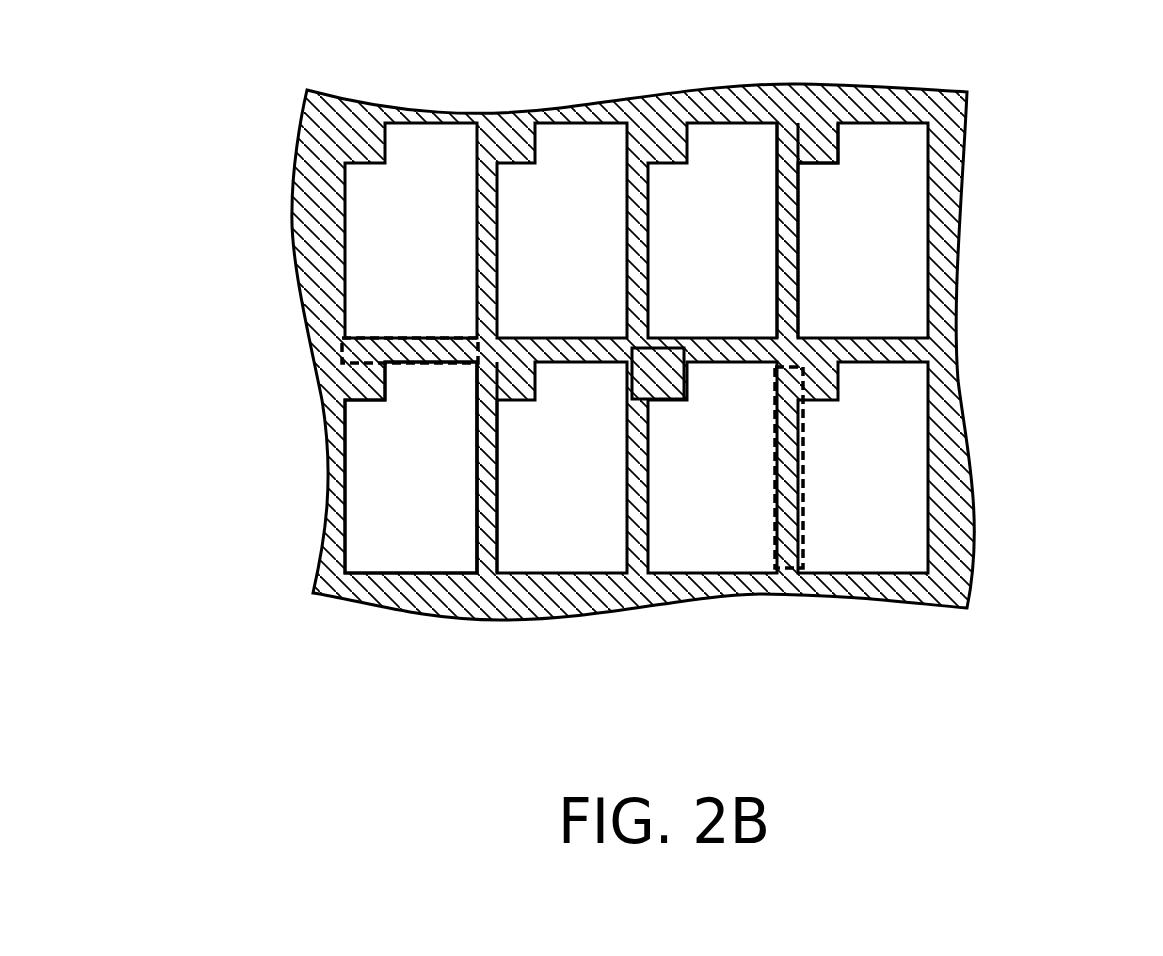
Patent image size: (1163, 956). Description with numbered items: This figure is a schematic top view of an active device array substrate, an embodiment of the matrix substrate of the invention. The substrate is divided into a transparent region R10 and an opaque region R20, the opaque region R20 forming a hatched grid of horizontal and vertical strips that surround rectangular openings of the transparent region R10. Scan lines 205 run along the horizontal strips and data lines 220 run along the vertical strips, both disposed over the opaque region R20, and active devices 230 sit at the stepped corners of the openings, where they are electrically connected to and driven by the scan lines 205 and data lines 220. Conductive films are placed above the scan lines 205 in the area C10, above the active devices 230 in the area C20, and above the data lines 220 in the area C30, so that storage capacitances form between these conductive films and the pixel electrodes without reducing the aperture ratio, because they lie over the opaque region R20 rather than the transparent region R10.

The scan line 205 is at (870, 347).
The data line 220 is at (787, 242).
The active device 230 is at (817, 143).
The area above the scan lines C10 is at (337, 346).
The area above the active devices C20 is at (662, 403).
The area above the data lines C30 is at (804, 483).
The transparent region R10 is at (395, 549).
The opaque region R20 is at (490, 564).